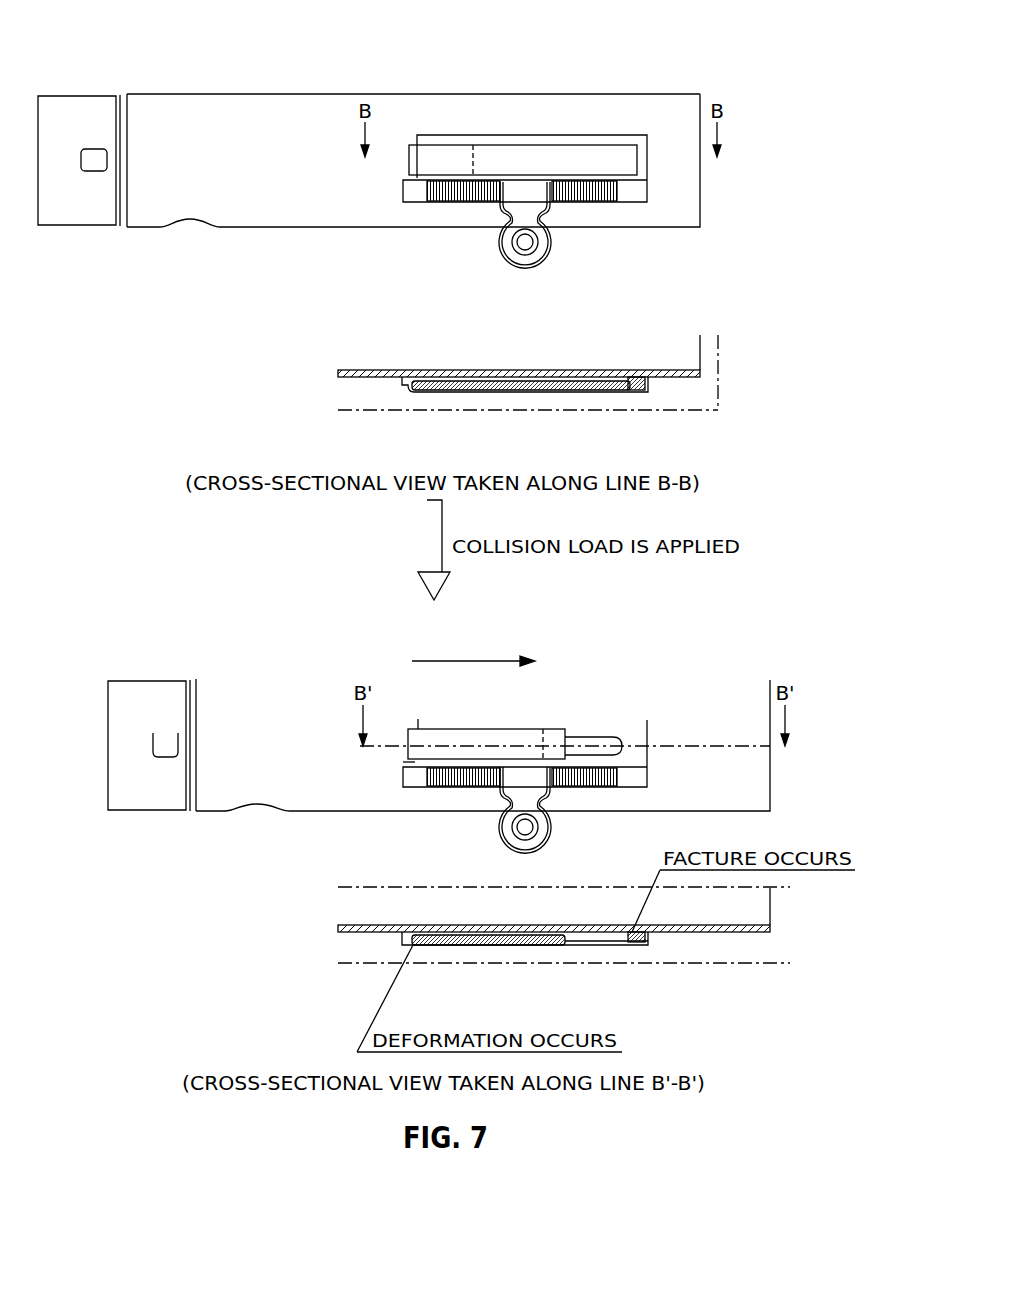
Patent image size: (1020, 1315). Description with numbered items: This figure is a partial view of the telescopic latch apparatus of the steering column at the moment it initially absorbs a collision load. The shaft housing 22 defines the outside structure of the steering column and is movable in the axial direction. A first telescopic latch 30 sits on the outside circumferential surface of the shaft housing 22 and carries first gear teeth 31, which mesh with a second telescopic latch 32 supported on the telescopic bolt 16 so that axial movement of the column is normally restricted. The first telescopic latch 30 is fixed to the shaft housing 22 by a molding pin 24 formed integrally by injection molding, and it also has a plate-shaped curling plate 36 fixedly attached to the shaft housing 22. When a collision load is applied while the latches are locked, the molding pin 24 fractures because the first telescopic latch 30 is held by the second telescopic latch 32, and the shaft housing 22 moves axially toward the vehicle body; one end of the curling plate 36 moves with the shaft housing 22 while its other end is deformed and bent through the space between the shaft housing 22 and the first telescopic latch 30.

The telescopic bolt 16 is at (505, 245).
The shaft housing 22 is at (511, 93).
The molding pin 24 is at (636, 372).
The first telescopic latch 30 is at (630, 135).
The first gear teeth 31 is at (595, 203).
The second telescopic latch 32 is at (548, 250).
The curling plate 36 is at (445, 150).